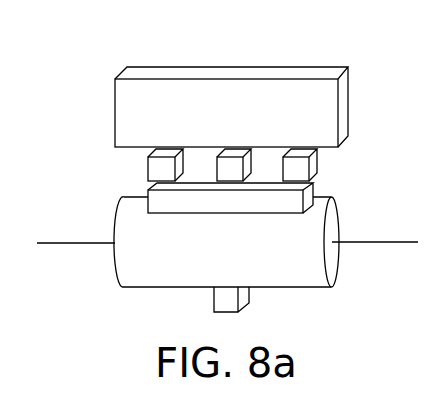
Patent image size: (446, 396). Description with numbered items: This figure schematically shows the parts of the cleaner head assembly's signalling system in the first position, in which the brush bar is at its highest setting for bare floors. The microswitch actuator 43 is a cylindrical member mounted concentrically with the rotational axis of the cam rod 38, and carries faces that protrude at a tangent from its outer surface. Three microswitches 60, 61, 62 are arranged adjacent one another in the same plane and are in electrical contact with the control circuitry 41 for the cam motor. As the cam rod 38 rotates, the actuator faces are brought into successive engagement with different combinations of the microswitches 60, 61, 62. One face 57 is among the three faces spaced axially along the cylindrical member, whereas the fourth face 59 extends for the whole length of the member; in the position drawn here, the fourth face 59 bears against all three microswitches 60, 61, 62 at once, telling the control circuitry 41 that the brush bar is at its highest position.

The control circuitry 41 is at (177, 73).
The microswitch 60 is at (162, 173).
The microswitch 61 is at (243, 165).
The microswitch 62 is at (313, 165).
The fourth face 59 is at (168, 203).
The microswitch actuator 43 is at (335, 264).
The cam rod 38 is at (77, 245).
The face 57 is at (244, 293).